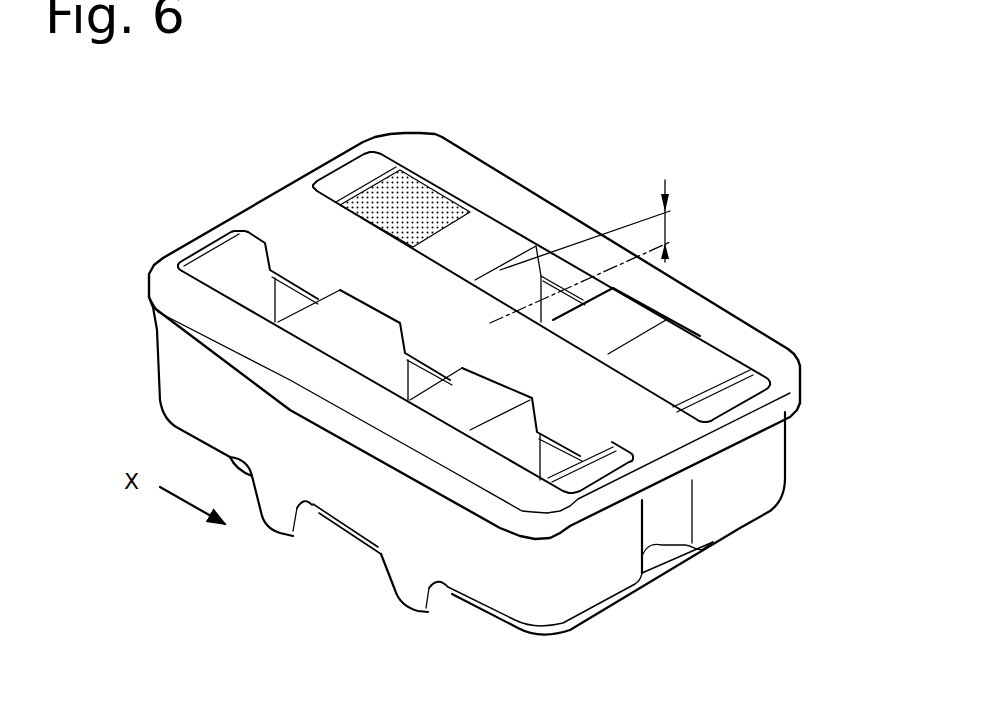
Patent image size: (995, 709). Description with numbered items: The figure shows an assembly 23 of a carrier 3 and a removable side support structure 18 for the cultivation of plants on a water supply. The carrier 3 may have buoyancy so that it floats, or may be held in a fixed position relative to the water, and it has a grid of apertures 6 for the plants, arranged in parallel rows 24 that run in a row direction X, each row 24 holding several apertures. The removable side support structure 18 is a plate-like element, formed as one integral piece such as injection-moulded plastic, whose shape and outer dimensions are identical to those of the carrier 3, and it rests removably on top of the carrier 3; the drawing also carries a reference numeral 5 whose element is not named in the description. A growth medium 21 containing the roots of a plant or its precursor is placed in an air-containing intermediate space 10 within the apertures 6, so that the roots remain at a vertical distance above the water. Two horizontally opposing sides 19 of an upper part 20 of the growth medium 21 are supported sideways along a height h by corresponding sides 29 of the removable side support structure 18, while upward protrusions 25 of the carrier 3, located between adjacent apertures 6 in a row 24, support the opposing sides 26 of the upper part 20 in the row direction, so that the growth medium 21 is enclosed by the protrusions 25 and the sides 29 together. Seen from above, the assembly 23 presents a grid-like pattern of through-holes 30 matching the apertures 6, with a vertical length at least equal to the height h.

The carrier 3 is at (743, 478).
The top plate 5 is at (747, 377).
The apertures 6 is at (537, 453).
The air-containing intermediate space 10 is at (555, 320).
The removable side support structure 18 is at (210, 313).
The horizontally opposing sides of the upper part of the growth medium 19 is at (511, 309).
The upper part of the growth medium 20 is at (443, 207).
The growth medium 21 is at (412, 190).
The assembly 23 is at (192, 236).
The rows 24 is at (322, 166).
The upward protrusions 25 is at (610, 330).
The horizontally opposing sides of the upper part of the growth medium in the row di 26 is at (702, 380).
The sides of the removable side support structure 29 is at (373, 353).
The through-holes 30 is at (213, 217).